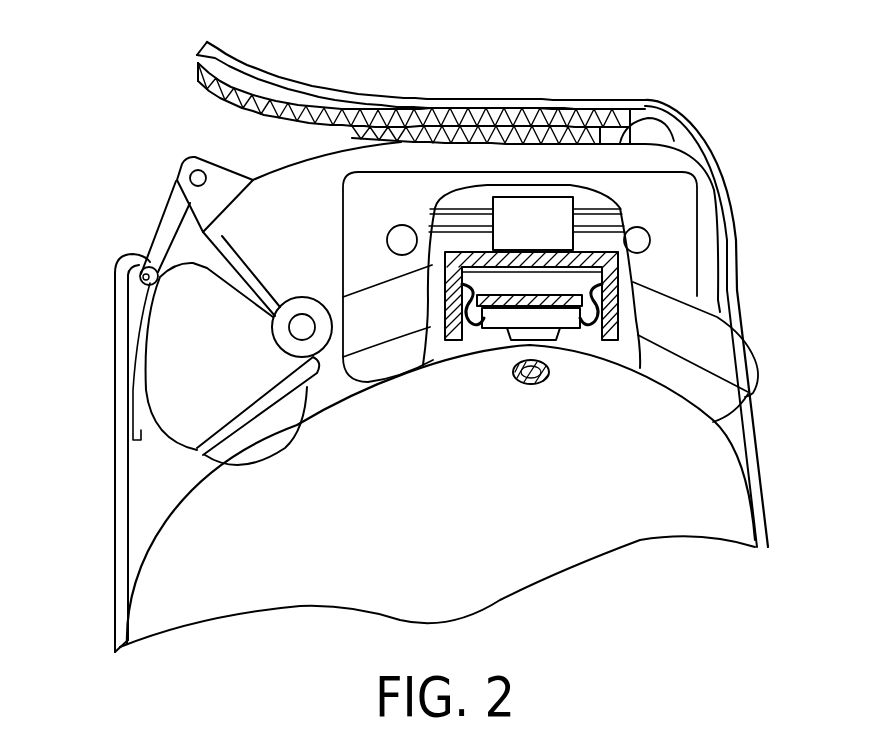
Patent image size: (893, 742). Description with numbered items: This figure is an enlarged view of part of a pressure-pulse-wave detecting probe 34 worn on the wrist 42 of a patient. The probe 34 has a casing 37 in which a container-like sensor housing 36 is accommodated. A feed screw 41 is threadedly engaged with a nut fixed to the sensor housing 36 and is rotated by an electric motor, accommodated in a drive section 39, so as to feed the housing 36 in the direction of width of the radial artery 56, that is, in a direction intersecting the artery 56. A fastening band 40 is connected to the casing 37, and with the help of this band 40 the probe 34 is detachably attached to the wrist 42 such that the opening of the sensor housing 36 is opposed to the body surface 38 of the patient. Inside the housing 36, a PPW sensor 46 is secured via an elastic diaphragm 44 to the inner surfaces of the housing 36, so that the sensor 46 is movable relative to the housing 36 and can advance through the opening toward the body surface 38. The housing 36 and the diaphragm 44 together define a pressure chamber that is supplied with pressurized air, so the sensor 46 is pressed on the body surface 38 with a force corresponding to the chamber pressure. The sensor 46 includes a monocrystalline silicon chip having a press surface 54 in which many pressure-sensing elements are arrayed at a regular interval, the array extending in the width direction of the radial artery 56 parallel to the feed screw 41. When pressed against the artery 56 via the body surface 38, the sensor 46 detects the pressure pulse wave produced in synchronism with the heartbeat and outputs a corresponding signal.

The pressure-pulse-wave (PPW) detecting probe 34 is at (165, 151).
The sensor housing 36 is at (673, 262).
The casing 37 is at (665, 158).
The body surface 38 is at (197, 488).
The drive section 39 is at (178, 405).
The fastening band 40 is at (118, 520).
The feed screw 41 is at (593, 216).
The wrist 42 is at (143, 620).
The elastic diaphragm 44 is at (585, 330).
The PPW sensor 46 is at (497, 320).
The press surface 54 is at (522, 342).
The radial artery 56 is at (531, 387).